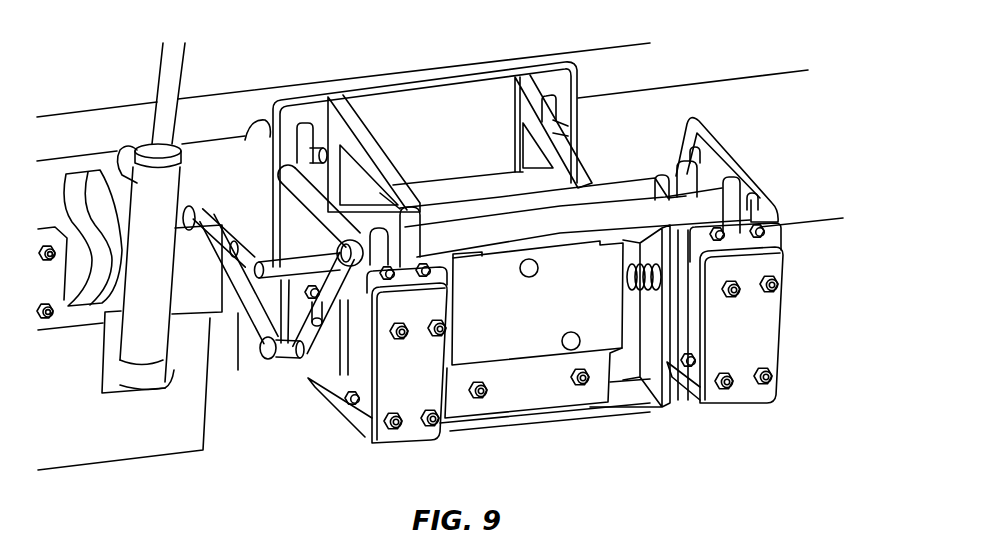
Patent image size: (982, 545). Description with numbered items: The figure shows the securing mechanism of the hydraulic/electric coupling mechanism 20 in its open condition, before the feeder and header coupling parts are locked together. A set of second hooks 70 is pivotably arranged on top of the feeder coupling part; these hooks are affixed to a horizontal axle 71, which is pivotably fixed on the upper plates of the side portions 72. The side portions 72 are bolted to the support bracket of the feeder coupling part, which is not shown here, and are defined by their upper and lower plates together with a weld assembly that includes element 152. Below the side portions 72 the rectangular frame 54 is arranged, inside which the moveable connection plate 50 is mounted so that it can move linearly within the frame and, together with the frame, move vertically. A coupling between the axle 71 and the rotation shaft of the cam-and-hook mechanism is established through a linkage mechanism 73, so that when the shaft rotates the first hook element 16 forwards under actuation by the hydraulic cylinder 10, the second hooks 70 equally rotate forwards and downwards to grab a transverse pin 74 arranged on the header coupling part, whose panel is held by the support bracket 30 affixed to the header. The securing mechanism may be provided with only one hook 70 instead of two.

The hydraulic cylinder 10 is at (173, 72).
The hook element 16 is at (98, 188).
The automatic coupling mechanism 20 is at (516, 255).
The support bracket 30 is at (438, 130).
The moveable connection plate 50 is at (523, 340).
The rectangular frame 54 is at (636, 390).
The second hooks 70 is at (283, 137).
The horizontal axle 71 is at (570, 228).
The side portions 72 is at (400, 395).
The linkage mechanism 73 is at (258, 320).
The transverse pin 74 is at (266, 262).
The weld assembly element 152 is at (390, 375).